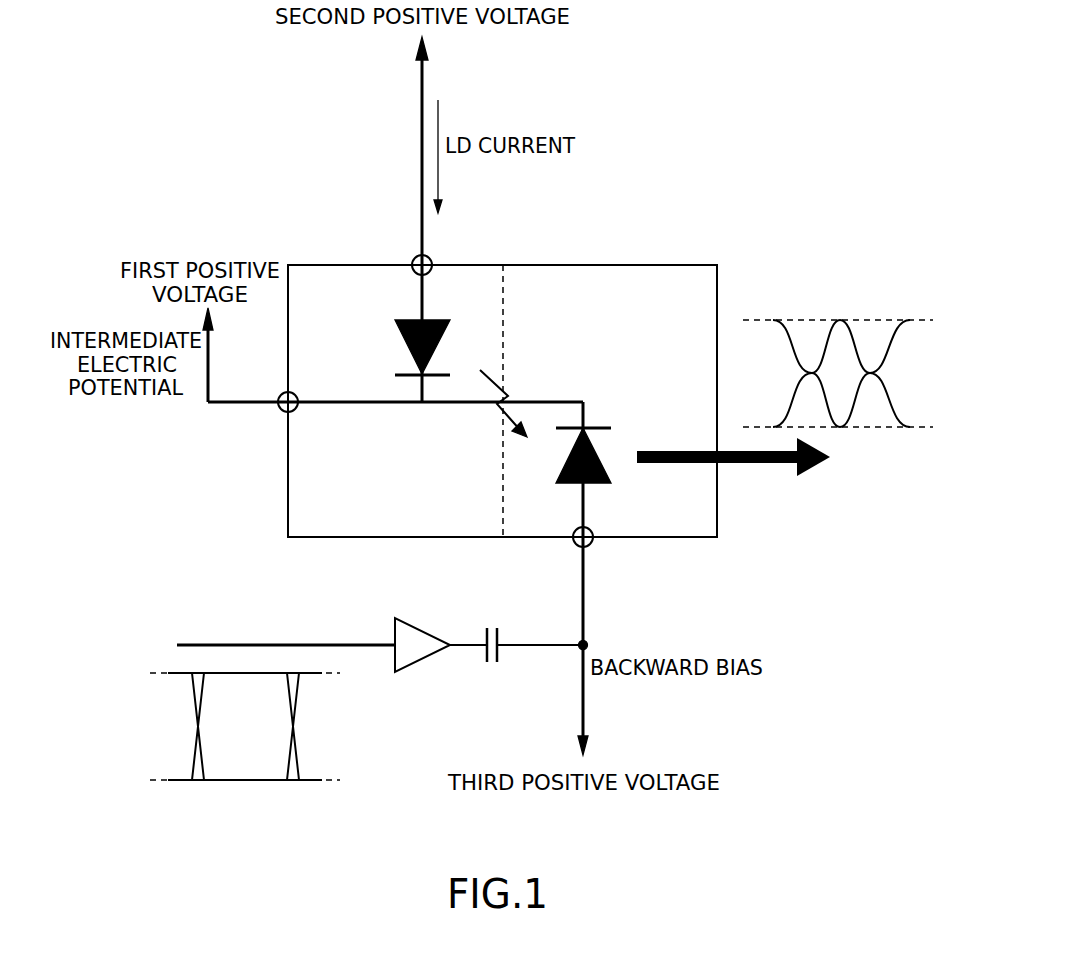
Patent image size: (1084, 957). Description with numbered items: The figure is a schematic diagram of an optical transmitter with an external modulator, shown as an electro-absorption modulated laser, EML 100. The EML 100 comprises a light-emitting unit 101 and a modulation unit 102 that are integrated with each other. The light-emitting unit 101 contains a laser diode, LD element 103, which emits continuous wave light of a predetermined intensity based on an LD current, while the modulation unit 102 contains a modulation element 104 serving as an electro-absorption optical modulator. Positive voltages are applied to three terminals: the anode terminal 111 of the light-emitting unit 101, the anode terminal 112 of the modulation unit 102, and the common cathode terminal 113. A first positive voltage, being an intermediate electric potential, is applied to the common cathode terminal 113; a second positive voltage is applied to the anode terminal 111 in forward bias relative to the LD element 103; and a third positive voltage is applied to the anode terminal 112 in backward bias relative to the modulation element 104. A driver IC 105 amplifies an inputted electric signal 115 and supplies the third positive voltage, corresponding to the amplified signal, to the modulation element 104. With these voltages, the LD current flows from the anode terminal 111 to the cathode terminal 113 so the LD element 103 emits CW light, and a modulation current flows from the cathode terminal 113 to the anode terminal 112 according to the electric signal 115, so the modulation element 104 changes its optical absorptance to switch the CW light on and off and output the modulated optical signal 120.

The electro-absorption modulated laser (EML) 100 is at (693, 214).
The light-emitting unit 101 is at (435, 436).
The modulation unit 102 is at (725, 470).
The laser diode (LD) element 103 is at (399, 337).
The modulation element 104 is at (629, 435).
The driver integrated circuit (driver IC) 105 is at (418, 667).
The anode terminal of the light-emitting unit 111 is at (438, 257).
The anode terminal of the modulation unit 112 is at (575, 548).
The common cathode terminal 113 is at (280, 418).
The electric signal 115 is at (237, 638).
The optical signal 120 is at (740, 472).